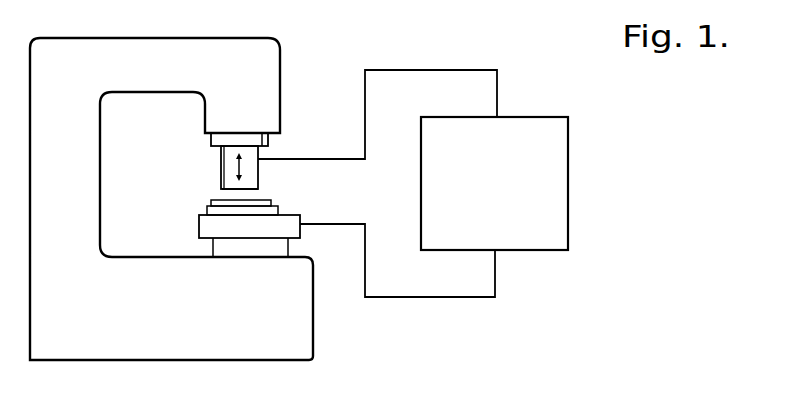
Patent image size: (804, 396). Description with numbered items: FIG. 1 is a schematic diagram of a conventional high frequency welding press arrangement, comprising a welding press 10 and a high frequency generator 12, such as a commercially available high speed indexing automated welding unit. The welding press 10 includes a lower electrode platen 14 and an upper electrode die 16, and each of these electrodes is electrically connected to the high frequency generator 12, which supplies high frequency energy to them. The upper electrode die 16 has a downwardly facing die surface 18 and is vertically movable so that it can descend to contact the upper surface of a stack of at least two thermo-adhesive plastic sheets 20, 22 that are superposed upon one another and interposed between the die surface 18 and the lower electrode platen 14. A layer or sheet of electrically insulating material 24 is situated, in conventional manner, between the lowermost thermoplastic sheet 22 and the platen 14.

The welding press 10 is at (250, 77).
The high frequency generator 12 is at (508, 227).
The lower electrode platen 14 is at (203, 214).
The upper electrode die 16 is at (222, 168).
The die surface 18 is at (231, 193).
The thermoplastic sheet 20 is at (270, 203).
The thermoplastic sheet 22 is at (276, 209).
The electrically insulating material 24 is at (300, 213).